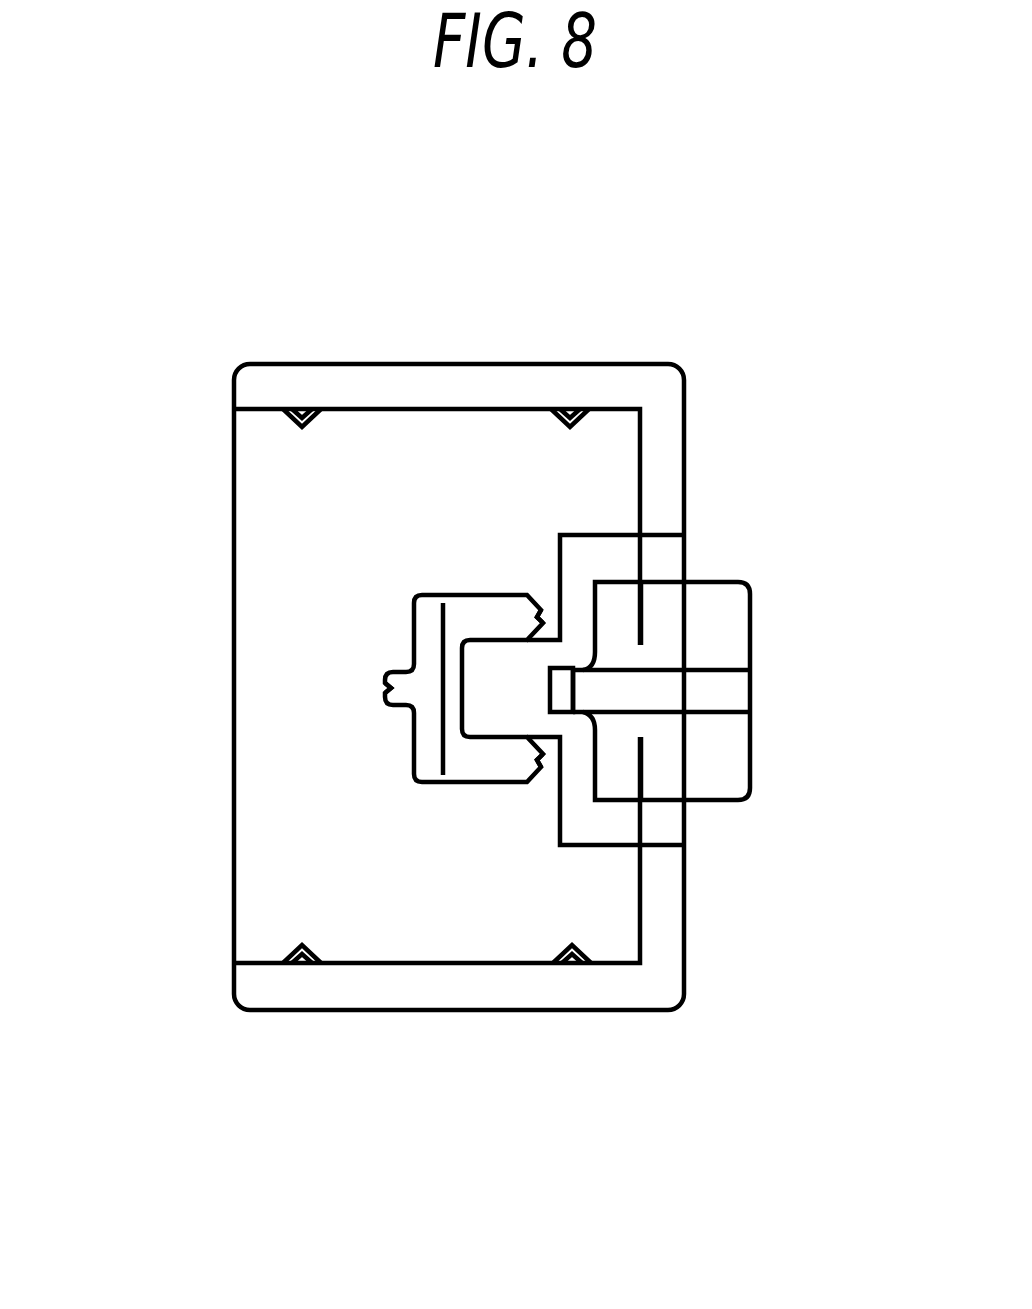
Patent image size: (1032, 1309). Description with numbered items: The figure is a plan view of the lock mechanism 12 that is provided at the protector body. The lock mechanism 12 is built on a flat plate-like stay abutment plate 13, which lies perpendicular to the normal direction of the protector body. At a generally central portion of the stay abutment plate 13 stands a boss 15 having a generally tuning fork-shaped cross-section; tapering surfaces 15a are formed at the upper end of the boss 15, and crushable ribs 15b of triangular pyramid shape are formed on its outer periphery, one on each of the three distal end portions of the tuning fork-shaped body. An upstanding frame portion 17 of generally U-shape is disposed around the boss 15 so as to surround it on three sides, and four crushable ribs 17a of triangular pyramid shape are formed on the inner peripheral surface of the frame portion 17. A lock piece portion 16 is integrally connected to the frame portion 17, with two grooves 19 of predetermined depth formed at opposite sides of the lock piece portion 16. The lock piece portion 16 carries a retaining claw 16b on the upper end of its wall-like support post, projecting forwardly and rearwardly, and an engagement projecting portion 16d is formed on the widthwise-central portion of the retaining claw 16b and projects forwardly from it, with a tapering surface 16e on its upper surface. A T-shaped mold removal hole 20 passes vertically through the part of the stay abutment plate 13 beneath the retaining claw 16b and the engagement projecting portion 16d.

The lock mechanism 12 is at (812, 268).
The stay abutment plate 13 is at (278, 795).
The boss 15 is at (408, 625).
The tapering surfaces 15a is at (462, 622).
The crushable ribs 15b is at (541, 613).
The lock piece portion 16 is at (753, 753).
The retaining claw 16b is at (702, 630).
The engagement projecting portion 16d is at (717, 697).
The tapering surface 16e is at (550, 695).
The frame portion 17 is at (320, 348).
The crushable ribs 17a is at (285, 411).
The grooves 19 is at (662, 562).
The mold removal hole 20 is at (563, 817).